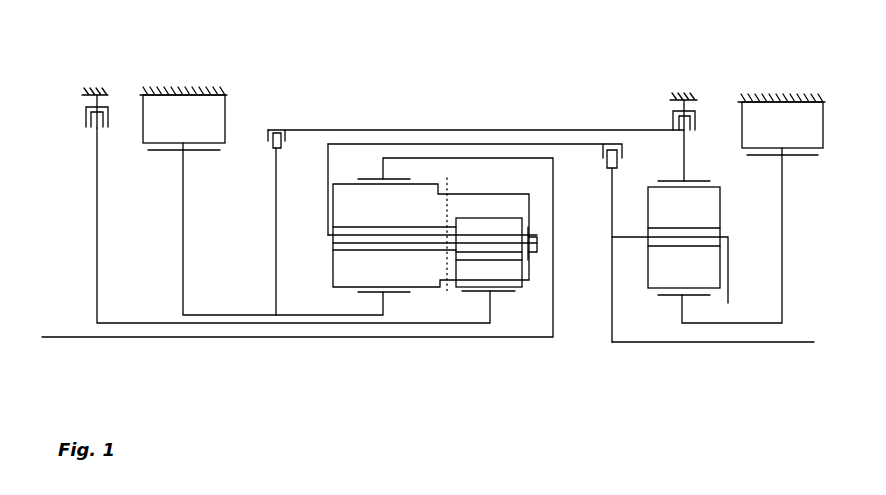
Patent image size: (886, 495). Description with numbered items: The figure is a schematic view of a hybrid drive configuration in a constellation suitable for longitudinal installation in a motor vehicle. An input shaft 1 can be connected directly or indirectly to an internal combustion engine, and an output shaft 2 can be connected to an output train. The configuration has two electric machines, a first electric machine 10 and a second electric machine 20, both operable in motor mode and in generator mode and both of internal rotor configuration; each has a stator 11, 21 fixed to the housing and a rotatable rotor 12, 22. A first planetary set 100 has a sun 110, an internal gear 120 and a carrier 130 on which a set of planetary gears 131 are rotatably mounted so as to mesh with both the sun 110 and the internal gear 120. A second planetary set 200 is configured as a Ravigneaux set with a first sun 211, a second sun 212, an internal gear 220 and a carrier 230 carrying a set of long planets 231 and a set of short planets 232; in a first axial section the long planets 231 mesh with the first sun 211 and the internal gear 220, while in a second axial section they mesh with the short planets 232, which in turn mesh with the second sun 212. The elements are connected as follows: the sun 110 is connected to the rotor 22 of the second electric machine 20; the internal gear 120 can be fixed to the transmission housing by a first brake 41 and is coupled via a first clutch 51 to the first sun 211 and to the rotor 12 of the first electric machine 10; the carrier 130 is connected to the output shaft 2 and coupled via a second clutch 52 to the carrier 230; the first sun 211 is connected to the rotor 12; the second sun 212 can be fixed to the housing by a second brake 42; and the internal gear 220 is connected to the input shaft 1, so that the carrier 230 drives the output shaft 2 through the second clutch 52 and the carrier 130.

The input shaft 1 is at (57, 338).
The output shaft 2 is at (816, 343).
The first electric machine 10 is at (185, 82).
The stator 11 is at (168, 115).
The rotor 12 is at (207, 148).
The second electric machine 20 is at (781, 86).
The stator 21 is at (755, 118).
The rotor 22 is at (798, 153).
The first brake 41 is at (685, 93).
The second brake 42 is at (96, 88).
The first clutch 51 is at (276, 128).
The second clutch 52 is at (612, 151).
The first planetary set 100 is at (694, 217).
The sun 110 is at (664, 297).
The internal gear 120 is at (667, 179).
The carrier 130 is at (729, 273).
The planetary gears 131 is at (696, 273).
The second planetary set 200 is at (415, 216).
The first sun 211 is at (396, 294).
The second sun 212 is at (493, 330).
The internal gear 220 is at (373, 177).
The carrier 230 is at (327, 238).
The long planets 231 is at (353, 273).
The short planets 232 is at (468, 277).